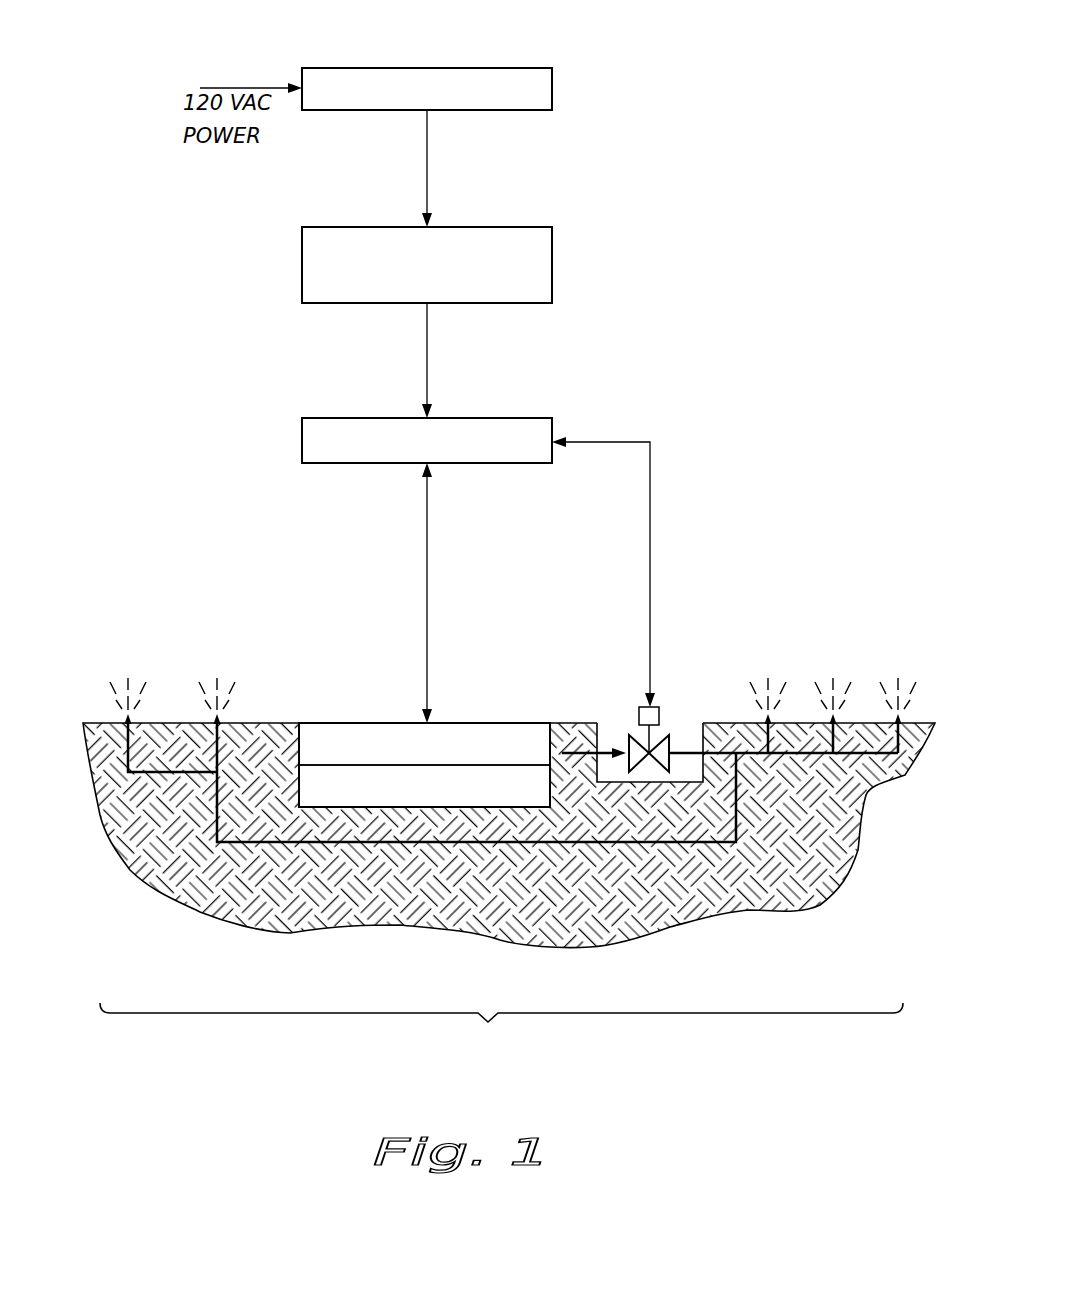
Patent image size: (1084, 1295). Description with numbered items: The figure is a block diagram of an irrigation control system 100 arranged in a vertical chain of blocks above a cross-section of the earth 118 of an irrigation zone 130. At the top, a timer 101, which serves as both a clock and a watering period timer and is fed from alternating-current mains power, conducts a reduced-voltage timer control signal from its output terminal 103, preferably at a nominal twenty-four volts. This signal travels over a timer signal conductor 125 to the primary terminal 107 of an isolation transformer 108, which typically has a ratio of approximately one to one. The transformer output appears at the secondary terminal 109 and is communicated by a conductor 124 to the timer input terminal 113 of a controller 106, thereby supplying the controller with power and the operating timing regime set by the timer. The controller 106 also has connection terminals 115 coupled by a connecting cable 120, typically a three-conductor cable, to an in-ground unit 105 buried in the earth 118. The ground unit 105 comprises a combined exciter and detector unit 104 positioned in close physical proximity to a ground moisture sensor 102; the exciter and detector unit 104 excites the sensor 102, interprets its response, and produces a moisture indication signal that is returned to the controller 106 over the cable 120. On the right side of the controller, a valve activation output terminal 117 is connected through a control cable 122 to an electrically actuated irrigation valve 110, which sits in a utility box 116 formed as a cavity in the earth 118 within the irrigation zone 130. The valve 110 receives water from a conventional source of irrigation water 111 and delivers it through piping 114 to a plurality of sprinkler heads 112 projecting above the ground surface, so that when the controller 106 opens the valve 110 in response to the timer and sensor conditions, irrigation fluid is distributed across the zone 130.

The irrigation control system 100 is at (724, 54).
The timer 101 is at (490, 67).
The ground moisture sensor 102 is at (345, 790).
The output terminal 103 is at (430, 112).
The exciter and detector unit 104 is at (497, 740).
The ground unit 105 is at (468, 712).
The controller 106 is at (302, 441).
The primary terminal 107 is at (432, 222).
The isolation transformer 108 is at (552, 258).
The secondary terminal 109 is at (430, 305).
The irrigation valve 110 is at (673, 740).
The source of irrigation water 111 is at (608, 750).
The sprinkler heads 112 is at (137, 725).
The timer input terminal 113 is at (432, 413).
The piping 114 is at (163, 776).
The connection terminals 115 is at (430, 465).
The utility box 116 is at (657, 783).
The valve activation output terminal 117 is at (552, 438).
The earth 118 is at (477, 935).
The connecting cable 120 is at (427, 582).
The control cable 122 is at (650, 528).
The conductor 124 is at (427, 368).
The timer signal conductor 125 is at (427, 178).
The irrigation zone 130 is at (501, 1030).